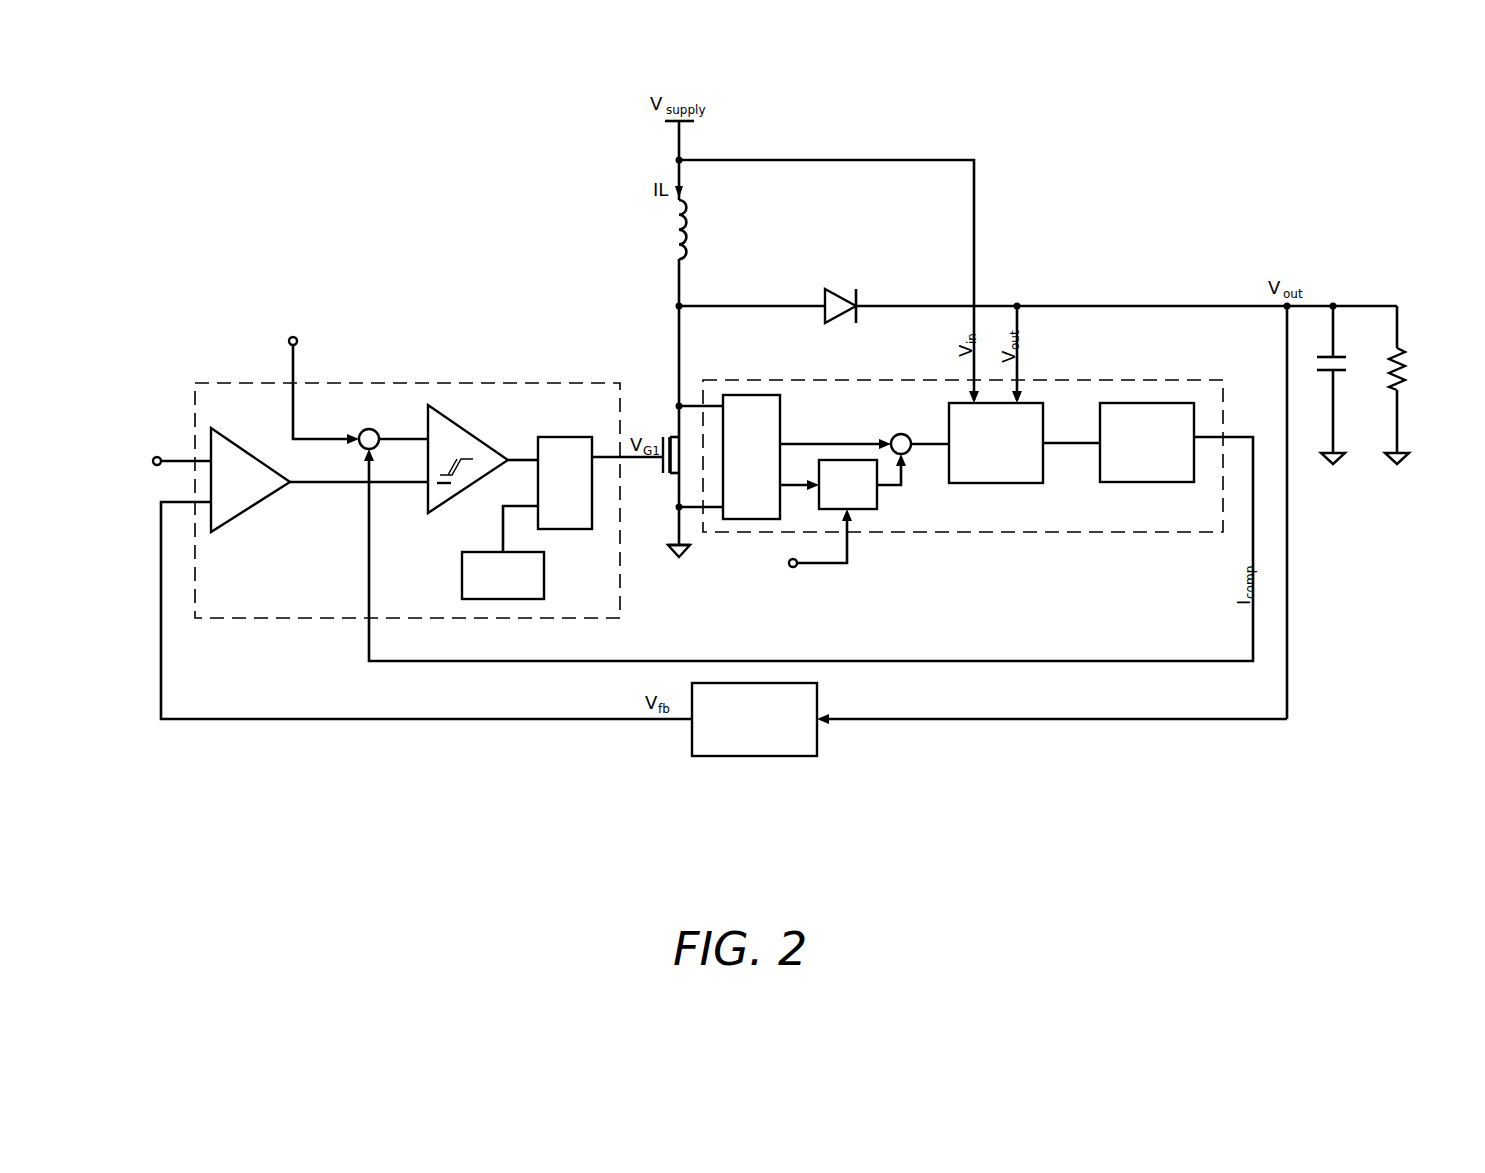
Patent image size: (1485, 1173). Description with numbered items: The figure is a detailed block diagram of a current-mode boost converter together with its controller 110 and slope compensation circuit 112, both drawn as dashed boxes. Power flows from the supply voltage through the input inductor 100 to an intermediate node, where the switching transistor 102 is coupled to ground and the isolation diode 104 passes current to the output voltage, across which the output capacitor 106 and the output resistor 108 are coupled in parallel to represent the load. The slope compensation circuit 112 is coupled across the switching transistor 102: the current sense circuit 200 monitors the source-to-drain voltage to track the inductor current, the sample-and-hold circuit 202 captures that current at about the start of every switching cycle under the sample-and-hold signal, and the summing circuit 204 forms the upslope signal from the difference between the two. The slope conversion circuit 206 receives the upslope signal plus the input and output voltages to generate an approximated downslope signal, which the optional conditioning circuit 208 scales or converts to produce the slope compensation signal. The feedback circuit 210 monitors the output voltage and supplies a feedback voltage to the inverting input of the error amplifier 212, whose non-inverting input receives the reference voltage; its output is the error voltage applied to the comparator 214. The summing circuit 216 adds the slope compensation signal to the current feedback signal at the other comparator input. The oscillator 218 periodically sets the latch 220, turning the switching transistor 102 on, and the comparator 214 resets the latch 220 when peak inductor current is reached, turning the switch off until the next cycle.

The input inductor 100 is at (695, 236).
The switching transistor 102 is at (683, 461).
The isolation diode 104 is at (840, 290).
The output capacitor 106 is at (1335, 372).
The output resistor 108 is at (1398, 348).
The controller 110 is at (437, 383).
The slope compensation circuit 112 is at (963, 535).
The current sense circuit 200 is at (781, 426).
The sample-and-hold circuit 202 is at (877, 496).
The summing circuit 204 is at (901, 434).
The slope conversion circuit 206 is at (1000, 483).
The conditioning circuit 208 is at (1147, 482).
The feedback circuit 210 is at (740, 757).
The error amplifier 212 is at (247, 513).
The comparator 214 is at (457, 497).
The summing circuit 216 is at (369, 429).
The oscillator 218 is at (462, 576).
The latch 220 is at (566, 437).